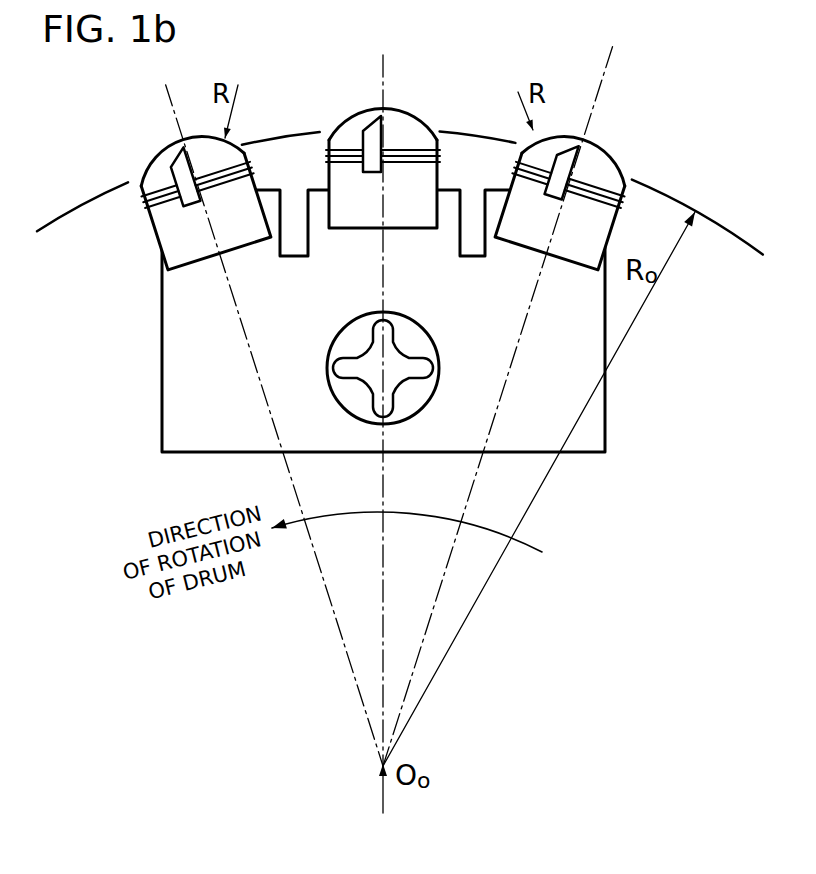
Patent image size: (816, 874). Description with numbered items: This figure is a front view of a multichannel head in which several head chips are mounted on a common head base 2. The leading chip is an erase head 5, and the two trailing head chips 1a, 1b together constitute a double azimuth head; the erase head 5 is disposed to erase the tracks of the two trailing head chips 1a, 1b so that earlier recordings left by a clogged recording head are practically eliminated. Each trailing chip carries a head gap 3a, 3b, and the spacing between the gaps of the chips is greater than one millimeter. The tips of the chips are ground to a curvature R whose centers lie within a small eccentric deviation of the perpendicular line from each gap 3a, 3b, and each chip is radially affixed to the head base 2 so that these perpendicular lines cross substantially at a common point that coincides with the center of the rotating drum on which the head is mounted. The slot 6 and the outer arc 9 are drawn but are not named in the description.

The head base 2 is at (188, 442).
The erase head 5 is at (238, 238).
The slot of left piston 6 is at (175, 147).
The head chip 1a is at (363, 223).
The head gap 3a is at (383, 110).
The head chip 1b is at (522, 237).
The head gap 3b is at (600, 160).
The outer circle of radius R0 9 is at (80, 210).